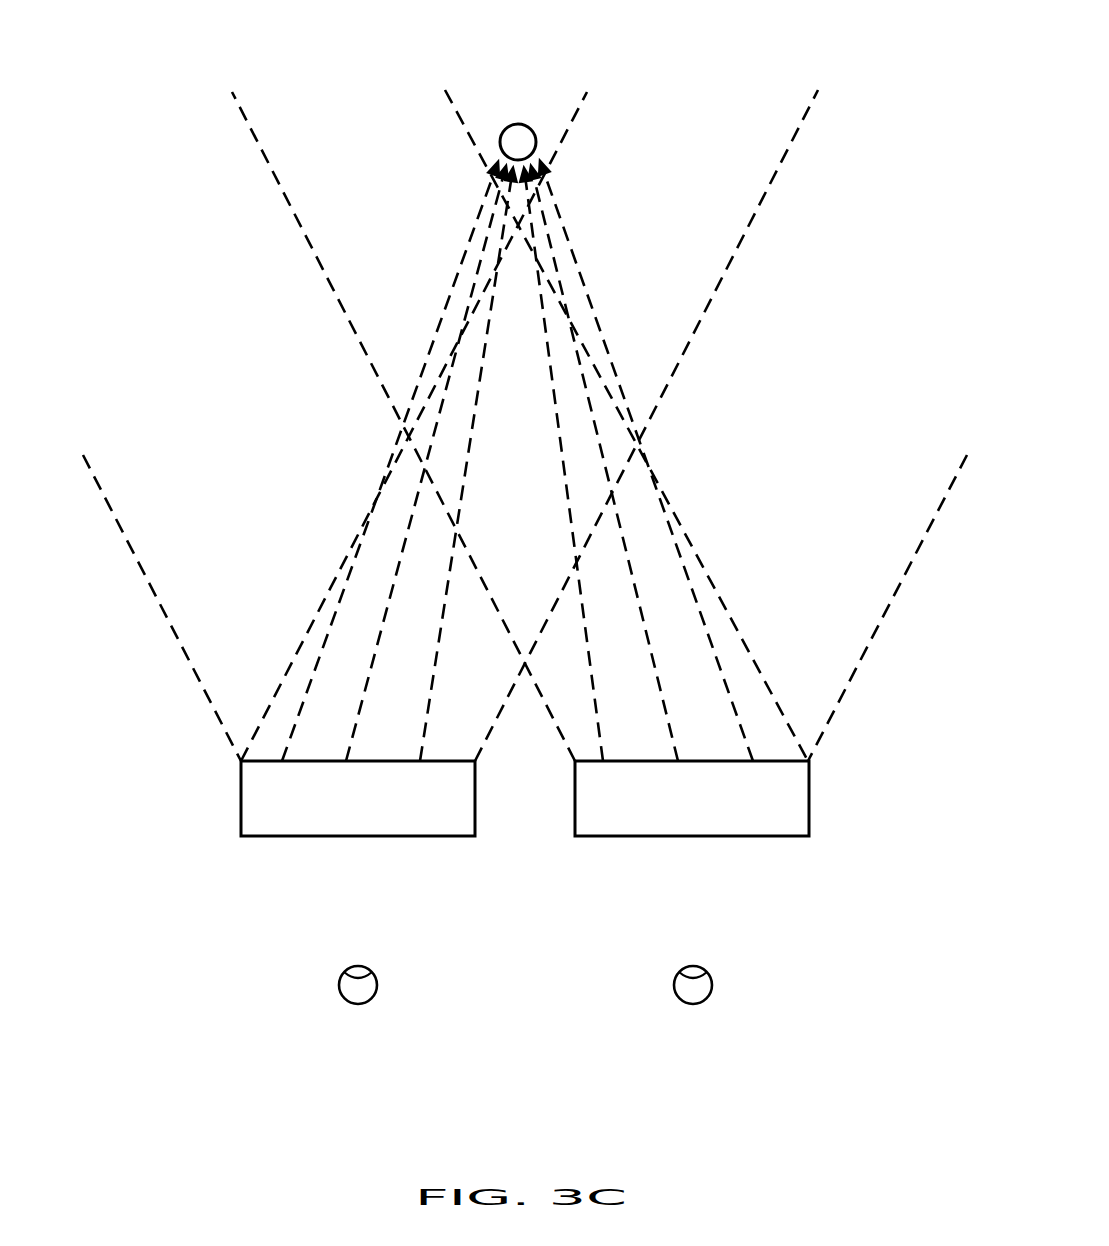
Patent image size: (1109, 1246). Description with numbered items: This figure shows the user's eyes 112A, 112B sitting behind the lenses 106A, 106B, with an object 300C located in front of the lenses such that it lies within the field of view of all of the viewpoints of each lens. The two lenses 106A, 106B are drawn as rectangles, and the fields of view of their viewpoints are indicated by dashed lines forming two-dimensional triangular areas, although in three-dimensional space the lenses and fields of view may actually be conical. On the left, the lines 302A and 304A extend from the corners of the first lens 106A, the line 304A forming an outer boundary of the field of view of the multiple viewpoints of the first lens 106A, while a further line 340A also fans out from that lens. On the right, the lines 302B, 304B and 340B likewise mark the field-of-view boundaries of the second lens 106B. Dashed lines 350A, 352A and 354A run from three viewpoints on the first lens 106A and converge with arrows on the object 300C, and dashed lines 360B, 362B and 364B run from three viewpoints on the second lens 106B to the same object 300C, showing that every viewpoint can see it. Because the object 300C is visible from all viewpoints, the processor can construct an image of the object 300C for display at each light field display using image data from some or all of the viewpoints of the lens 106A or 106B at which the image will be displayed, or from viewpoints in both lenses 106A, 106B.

The object 300C is at (518, 124).
The field-of-view boundary line of the first lens 302A is at (170, 627).
The field-of-view boundary line of the second lens 302B is at (883, 615).
The line forming outer boundary of field of view of first lens 304A is at (490, 723).
The line forming outer boundary of field of view of second lens 304B is at (557, 725).
The field-of-view line of the first lens 340A is at (300, 645).
The field-of-view line of the second lens 340B is at (743, 640).
The line of sight from first lens to object 350A is at (278, 712).
The line of sight from first lens to object 352A is at (375, 645).
The line of sight from first lens to object 354A is at (437, 613).
The line of sight from second lens to object 360B is at (740, 712).
The line of sight from second lens to object 362B is at (658, 703).
The line of sight from second lens to object 364B is at (593, 703).
The first lens 106A is at (241, 800).
The second lens 106B is at (809, 805).
The user's eye 112A is at (340, 995).
The user's eye 112B is at (675, 990).